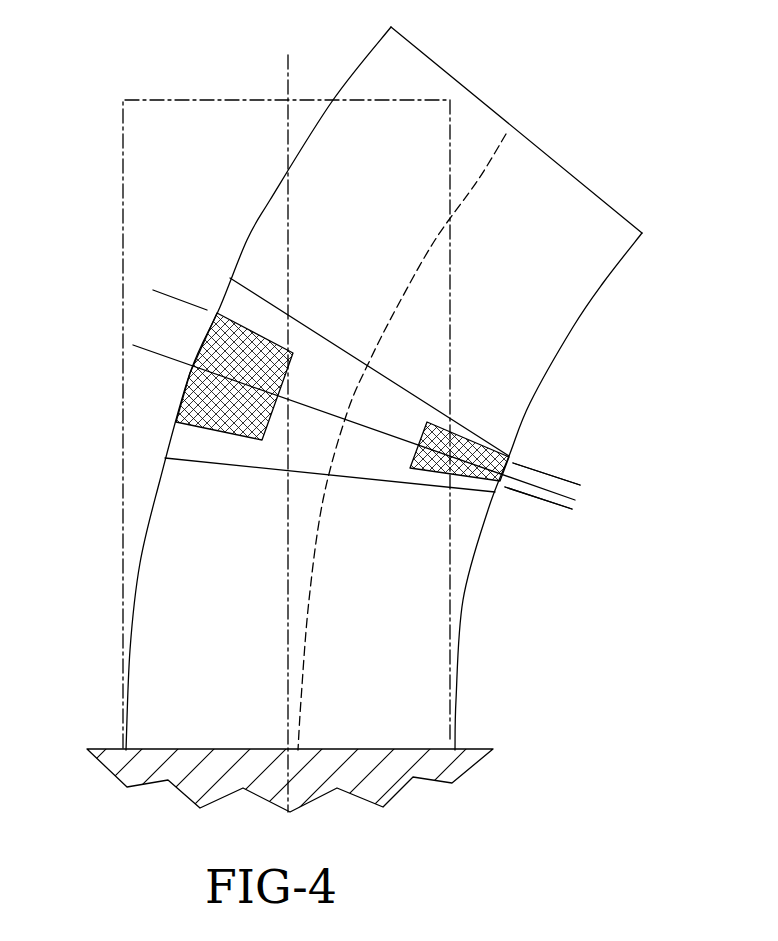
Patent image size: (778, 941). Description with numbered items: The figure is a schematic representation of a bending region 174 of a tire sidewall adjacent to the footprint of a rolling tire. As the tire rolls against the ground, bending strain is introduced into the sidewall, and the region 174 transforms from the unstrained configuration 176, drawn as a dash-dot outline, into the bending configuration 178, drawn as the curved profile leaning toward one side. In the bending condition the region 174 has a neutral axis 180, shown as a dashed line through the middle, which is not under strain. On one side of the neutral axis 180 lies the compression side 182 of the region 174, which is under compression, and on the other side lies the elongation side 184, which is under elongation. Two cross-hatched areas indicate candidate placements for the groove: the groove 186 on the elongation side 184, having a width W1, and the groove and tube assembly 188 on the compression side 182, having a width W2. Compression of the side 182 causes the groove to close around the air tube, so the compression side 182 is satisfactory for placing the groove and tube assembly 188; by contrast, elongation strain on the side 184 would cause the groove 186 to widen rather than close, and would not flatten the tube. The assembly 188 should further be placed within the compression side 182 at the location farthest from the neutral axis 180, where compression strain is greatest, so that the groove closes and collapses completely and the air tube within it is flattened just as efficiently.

The bending region 174 is at (341, 408).
The unstrained configuration 176 is at (208, 99).
The bending configuration 178 is at (408, 68).
The neutral axis 180 is at (480, 178).
The compression side 182 is at (542, 308).
The elongation side 184 is at (187, 554).
The groove 186 is at (177, 427).
The groove and tube assembly 188 is at (470, 445).
The first width W1 is at (179, 250).
The second width W2 is at (565, 508).